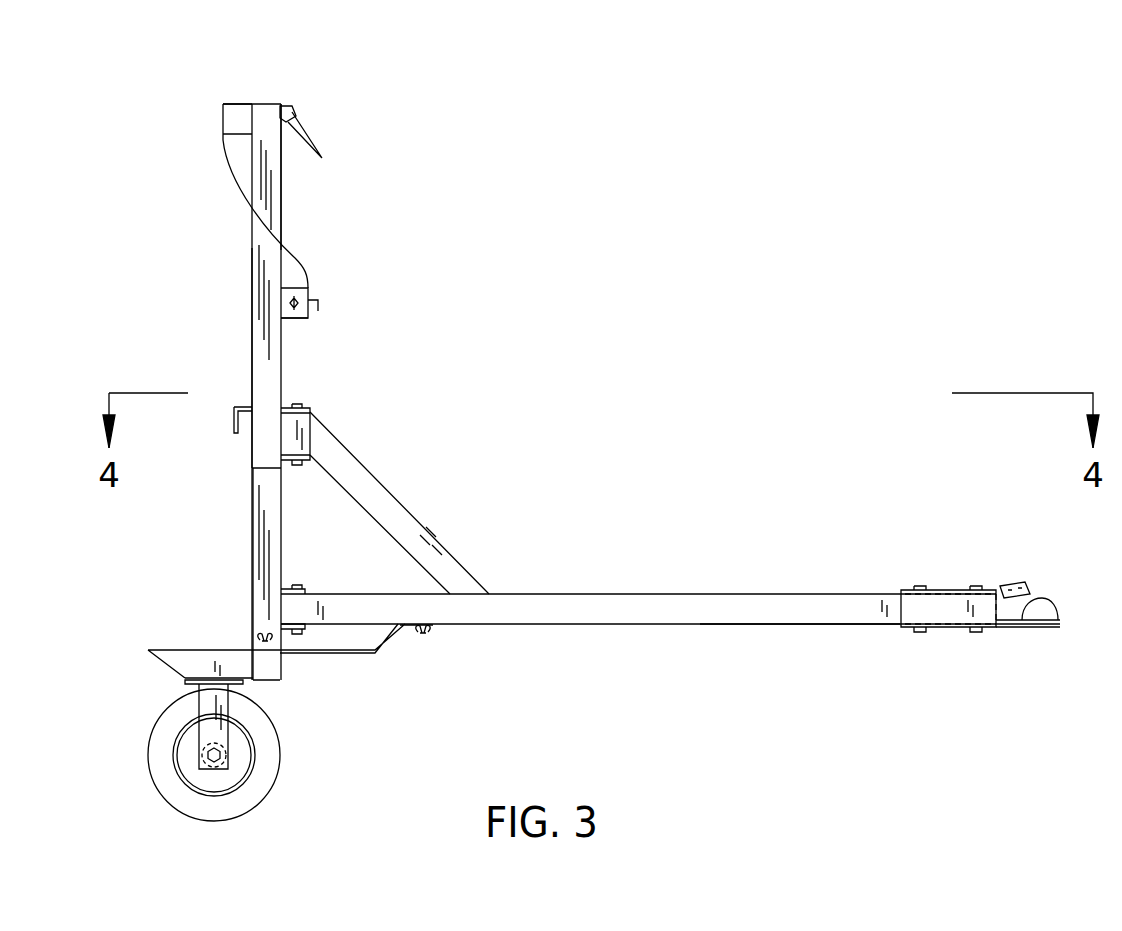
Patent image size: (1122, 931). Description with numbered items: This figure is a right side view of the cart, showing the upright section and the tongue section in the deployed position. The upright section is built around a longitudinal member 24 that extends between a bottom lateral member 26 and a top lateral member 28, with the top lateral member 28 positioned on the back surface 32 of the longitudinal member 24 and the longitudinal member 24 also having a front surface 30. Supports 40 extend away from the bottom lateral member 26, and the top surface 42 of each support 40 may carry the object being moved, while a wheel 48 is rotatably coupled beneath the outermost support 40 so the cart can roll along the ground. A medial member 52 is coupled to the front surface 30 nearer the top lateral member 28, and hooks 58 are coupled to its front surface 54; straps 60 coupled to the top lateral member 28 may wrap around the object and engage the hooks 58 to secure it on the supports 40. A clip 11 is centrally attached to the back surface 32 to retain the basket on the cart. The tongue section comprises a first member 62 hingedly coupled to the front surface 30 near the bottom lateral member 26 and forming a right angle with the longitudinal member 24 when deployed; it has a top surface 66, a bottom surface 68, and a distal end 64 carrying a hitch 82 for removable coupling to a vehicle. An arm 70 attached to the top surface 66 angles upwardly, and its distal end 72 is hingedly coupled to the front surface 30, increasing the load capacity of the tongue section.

The clip 11 is at (234, 420).
The longitudinal member 24 is at (252, 297).
The bottom lateral member 26 is at (282, 665).
The top lateral member 28 is at (240, 104).
The front surface 30 is at (281, 182).
The back surface 32 is at (252, 248).
The supports 40 is at (152, 648).
The top surface 42 is at (210, 650).
The wheels 48 is at (160, 724).
The medial member 52 is at (310, 290).
The front surface 54 is at (308, 318).
The hooks 58 is at (318, 305).
The straps 60 is at (223, 140).
The first member 62 is at (670, 594).
The distal end 64 is at (1000, 590).
The top surface 66 is at (755, 594).
The bottom surface 68 is at (752, 624).
The arm 70 is at (430, 528).
The distal end 72 is at (283, 425).
The hitch 82 is at (1000, 627).